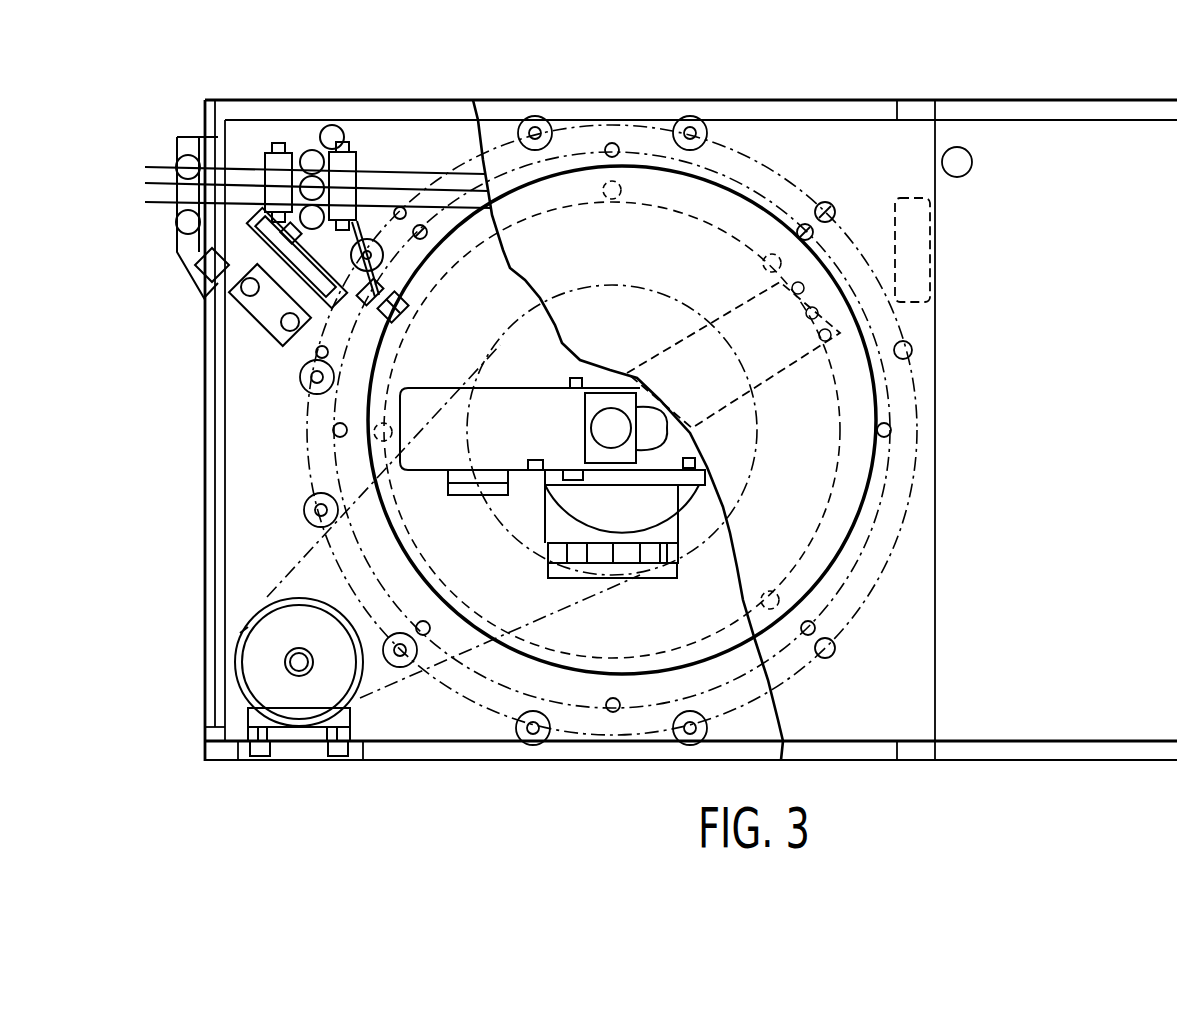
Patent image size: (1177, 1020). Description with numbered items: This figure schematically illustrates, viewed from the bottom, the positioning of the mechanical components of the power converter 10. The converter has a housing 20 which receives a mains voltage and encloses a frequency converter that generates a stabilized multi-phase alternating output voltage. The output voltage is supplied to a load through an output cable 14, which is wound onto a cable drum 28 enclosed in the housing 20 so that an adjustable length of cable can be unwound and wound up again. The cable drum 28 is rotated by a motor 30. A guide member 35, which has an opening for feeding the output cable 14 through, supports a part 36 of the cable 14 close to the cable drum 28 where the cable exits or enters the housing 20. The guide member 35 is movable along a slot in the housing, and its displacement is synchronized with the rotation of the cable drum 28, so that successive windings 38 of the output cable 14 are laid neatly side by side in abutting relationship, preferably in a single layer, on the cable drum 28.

The power converter 10 is at (1025, 752).
The output cable 14 is at (385, 180).
The housing 20 is at (393, 752).
The cable drum 28 is at (742, 222).
The motor 30 is at (268, 690).
The guide member 35 is at (267, 185).
The part of the cable 36 is at (251, 183).
The windings 38 is at (218, 252).